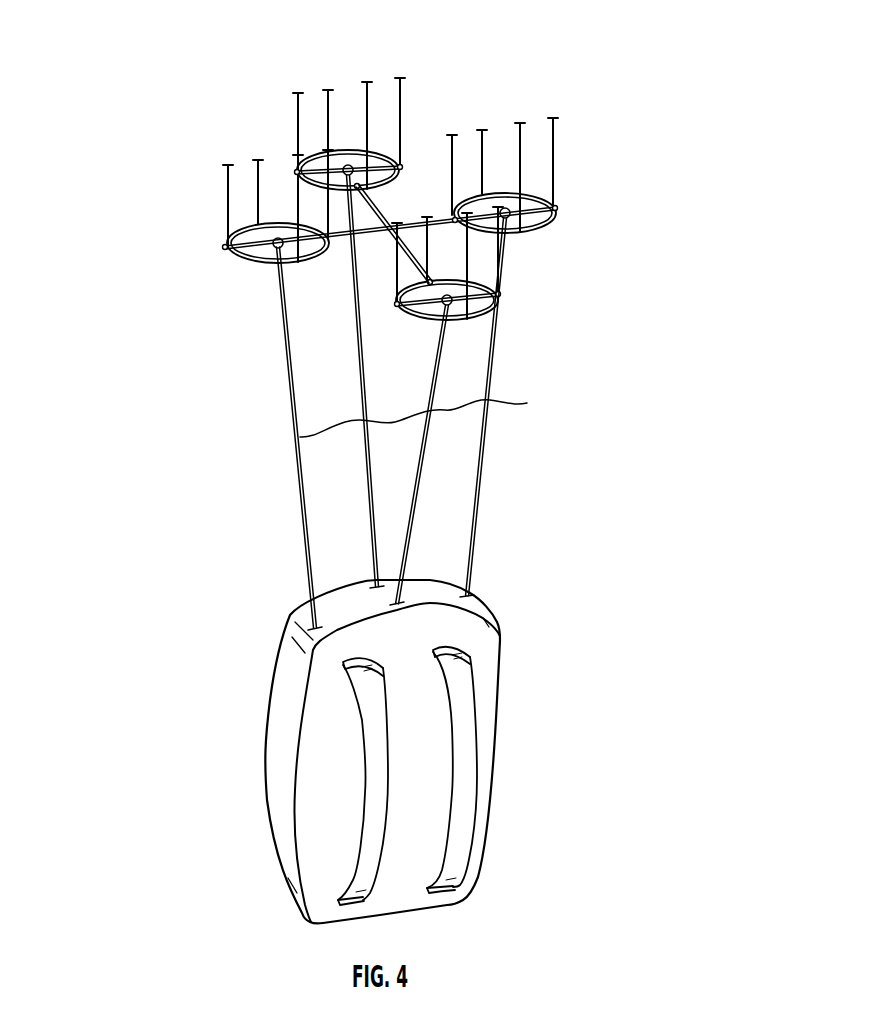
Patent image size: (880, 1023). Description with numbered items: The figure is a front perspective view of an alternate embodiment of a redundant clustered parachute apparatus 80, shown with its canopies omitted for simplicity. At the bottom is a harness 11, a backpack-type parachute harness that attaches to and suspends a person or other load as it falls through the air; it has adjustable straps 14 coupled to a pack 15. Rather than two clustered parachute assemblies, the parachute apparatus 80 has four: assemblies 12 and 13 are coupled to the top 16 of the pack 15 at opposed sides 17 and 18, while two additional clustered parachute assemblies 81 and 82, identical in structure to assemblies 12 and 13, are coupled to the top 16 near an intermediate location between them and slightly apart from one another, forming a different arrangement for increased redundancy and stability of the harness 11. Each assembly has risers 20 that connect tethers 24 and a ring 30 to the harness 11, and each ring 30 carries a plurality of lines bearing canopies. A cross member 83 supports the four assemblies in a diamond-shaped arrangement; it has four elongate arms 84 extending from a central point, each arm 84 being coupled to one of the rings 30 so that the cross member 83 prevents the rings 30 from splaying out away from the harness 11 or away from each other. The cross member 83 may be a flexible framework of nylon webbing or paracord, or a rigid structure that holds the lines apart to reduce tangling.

The parachute apparatus 80 is at (141, 468).
The clustered parachute assembly 81 is at (338, 64).
The clustered parachute assembly 82 is at (480, 254).
The cross member 83 is at (372, 237).
The elongate arm 84 is at (330, 233).
The clustered parachute assembly 12 is at (239, 149).
The clustered parachute assembly 13 is at (542, 103).
The ring 30 is at (400, 168).
The tether 24 is at (383, 175).
The riser 20 is at (490, 400).
The harness 11 is at (270, 744).
The adjustable strap 14 is at (373, 813).
The pack 15 is at (488, 660).
The top 16 is at (417, 583).
The side 17 is at (292, 632).
The side 18 is at (487, 613).